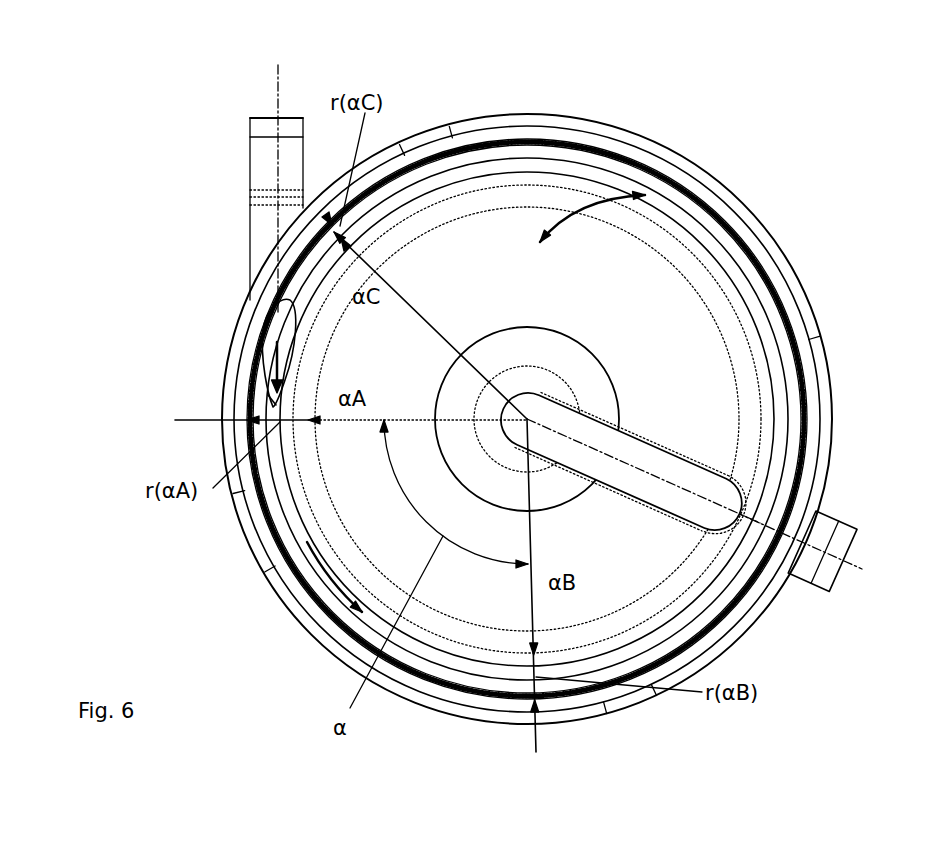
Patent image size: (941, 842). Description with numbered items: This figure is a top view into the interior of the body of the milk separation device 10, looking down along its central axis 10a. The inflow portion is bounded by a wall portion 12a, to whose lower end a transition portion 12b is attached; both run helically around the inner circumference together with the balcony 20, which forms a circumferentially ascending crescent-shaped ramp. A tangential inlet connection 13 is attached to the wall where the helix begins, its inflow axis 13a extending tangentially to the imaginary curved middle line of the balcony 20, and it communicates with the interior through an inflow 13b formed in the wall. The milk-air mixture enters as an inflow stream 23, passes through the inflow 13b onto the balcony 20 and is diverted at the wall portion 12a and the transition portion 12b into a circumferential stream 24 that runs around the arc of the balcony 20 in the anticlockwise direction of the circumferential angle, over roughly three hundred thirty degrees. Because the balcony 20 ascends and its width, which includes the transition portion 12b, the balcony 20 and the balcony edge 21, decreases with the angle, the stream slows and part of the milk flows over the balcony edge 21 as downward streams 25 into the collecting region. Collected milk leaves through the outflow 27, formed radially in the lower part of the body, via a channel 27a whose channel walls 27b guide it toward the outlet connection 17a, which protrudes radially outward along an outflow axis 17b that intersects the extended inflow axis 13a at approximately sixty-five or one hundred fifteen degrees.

The milk separation device 10 is at (135, 222).
The central axis 10a is at (600, 362).
The wall portion 12a is at (280, 540).
The transition portion 12b is at (297, 548).
The tangential inlet connection 13 is at (263, 153).
The inflow axis 13a is at (274, 228).
The inflow 13b is at (266, 396).
The outlet connection 17a is at (832, 528).
The outflow axis 17b is at (848, 572).
The balcony 20 is at (290, 478).
The balcony edge 21 is at (603, 190).
The inflow stream 23 is at (275, 327).
The circumferential stream 24 is at (327, 583).
The downward streams 25 is at (548, 237).
The outflow 27 is at (617, 400).
The channel 27a is at (630, 453).
The channel walls 27b is at (653, 510).